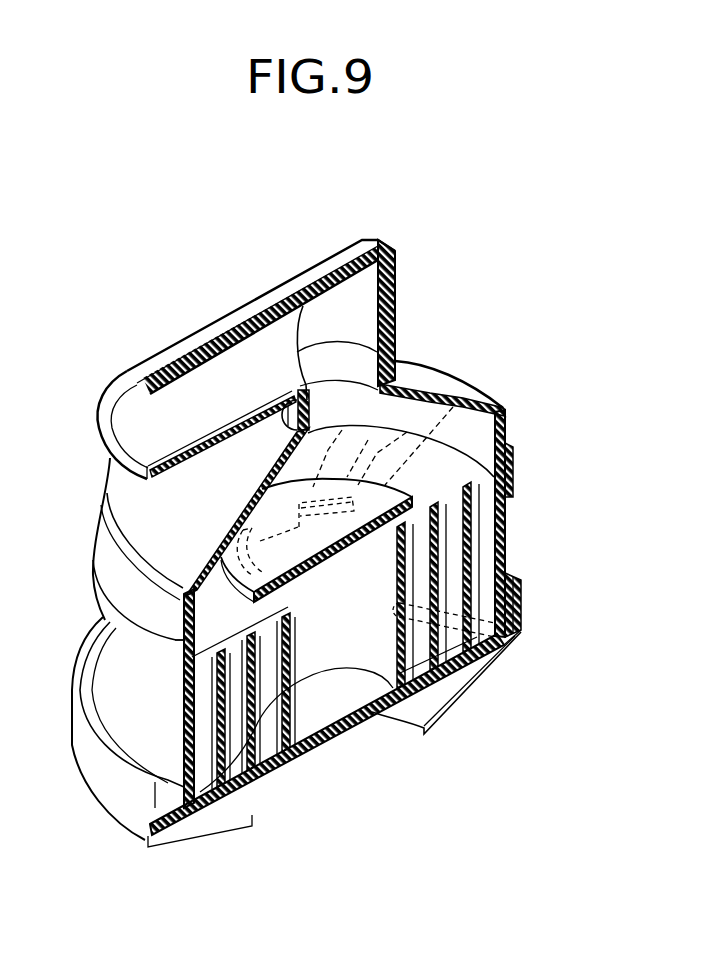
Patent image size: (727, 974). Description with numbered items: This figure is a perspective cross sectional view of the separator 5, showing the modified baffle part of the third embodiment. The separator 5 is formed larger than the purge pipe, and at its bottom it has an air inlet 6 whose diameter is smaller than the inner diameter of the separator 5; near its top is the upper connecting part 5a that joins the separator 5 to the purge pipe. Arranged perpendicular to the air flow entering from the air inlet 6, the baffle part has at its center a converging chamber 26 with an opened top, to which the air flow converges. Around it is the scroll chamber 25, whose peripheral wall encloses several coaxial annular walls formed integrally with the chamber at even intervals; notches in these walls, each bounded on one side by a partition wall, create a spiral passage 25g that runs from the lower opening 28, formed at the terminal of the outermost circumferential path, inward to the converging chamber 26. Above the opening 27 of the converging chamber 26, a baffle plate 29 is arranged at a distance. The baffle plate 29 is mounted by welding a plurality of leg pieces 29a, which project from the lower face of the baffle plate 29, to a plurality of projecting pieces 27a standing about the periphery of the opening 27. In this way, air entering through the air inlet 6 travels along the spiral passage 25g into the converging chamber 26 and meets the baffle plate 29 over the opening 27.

The separator 5 is at (436, 338).
The upper connecting part 5a is at (228, 325).
The air inlet 6 is at (403, 726).
The scroll chamber 25 is at (516, 512).
The spiral passage 25g is at (290, 700).
The converging chamber 26 is at (355, 641).
The opening 27 is at (387, 527).
The projecting pieces 27a is at (338, 432).
The lower opening 28 is at (487, 632).
The baffle plate 29 is at (483, 442).
The leg pieces 29a is at (413, 430).